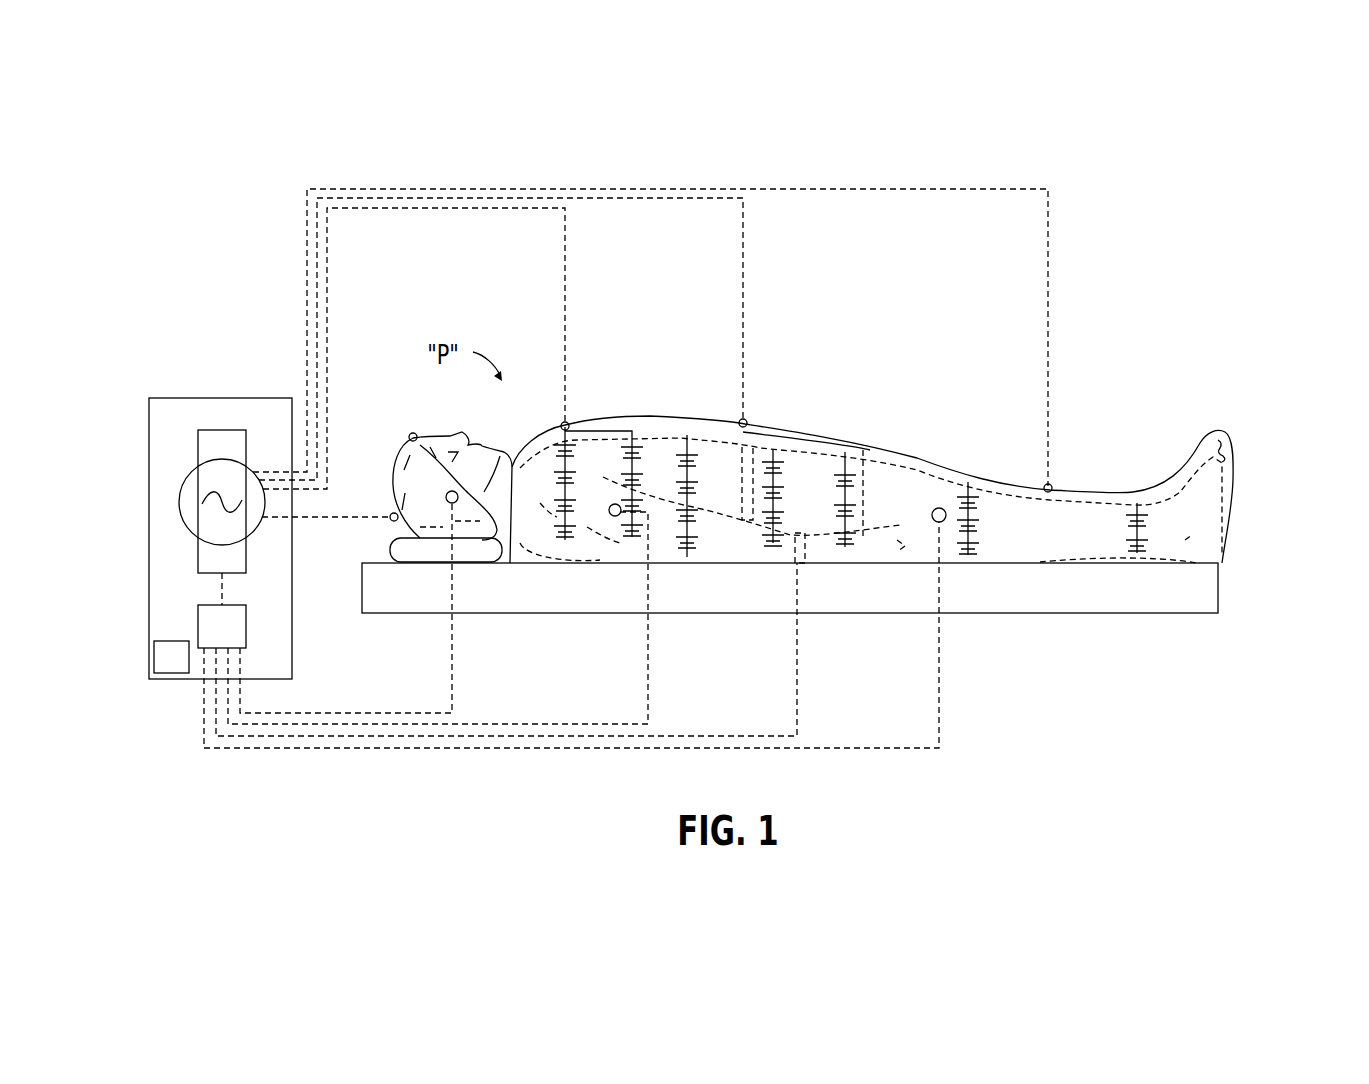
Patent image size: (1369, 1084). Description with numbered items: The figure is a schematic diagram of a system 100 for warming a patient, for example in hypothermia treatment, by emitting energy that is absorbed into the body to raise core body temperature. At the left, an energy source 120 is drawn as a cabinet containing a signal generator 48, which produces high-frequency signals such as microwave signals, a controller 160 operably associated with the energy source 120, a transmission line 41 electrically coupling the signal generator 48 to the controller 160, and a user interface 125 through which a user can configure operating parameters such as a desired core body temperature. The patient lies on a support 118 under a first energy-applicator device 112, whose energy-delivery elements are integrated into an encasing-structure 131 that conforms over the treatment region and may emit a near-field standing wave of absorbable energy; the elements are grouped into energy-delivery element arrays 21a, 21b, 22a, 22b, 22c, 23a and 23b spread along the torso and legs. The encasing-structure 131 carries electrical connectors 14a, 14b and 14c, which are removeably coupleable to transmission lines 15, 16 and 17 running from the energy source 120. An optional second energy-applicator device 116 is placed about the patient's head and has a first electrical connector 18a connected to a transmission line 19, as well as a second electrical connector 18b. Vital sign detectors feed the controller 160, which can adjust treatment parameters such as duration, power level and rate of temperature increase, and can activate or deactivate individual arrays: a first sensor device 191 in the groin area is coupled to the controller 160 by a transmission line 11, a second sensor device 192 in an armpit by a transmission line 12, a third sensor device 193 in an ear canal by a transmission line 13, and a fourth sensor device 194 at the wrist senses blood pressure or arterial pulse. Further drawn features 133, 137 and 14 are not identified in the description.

The system 100 is at (1121, 154).
The energy source 120 is at (180, 397).
The signal generator 48 is at (228, 428).
The transmission line 41 is at (222, 590).
The controller 160 is at (246, 630).
The user interface 125 is at (170, 674).
The transmission line 19 is at (388, 519).
The first electrical connector 18a is at (392, 513).
The second electrical connector 18b is at (413, 433).
The second energy-applicator device 116 is at (394, 460).
The third sensor device 193 is at (450, 503).
The second sensor device 192 is at (612, 516).
The first sensor device 191 is at (936, 522).
The garment edge 133 is at (506, 543).
The first energy-applicator device 112 is at (650, 418).
The encasing-structure 131 is at (917, 456).
The foot 137 is at (1231, 431).
The table 118 is at (1207, 592).
The electrical connector 14a is at (568, 422).
The electrical connector 14b is at (746, 420).
The electrical connector 14c is at (1050, 485).
The transmission line 15 is at (565, 265).
The transmission line 16 is at (743, 265).
The transmission line 17 is at (1048, 265).
The fourth sensor device 194 is at (801, 538).
The energy-delivery element array 21a is at (565, 543).
The energy-delivery element array 21b is at (632, 552).
The energy-delivery element array 22a is at (687, 563).
The energy-delivery element array 22b is at (773, 550).
The energy-delivery element array 22c is at (845, 555).
The energy-delivery element array 23a is at (968, 560).
The energy-delivery element array 23b is at (1137, 565).
The transmission line 11 is at (941, 678).
The transmission line 12 is at (650, 678).
The transmission line 13 is at (454, 675).
The cable 14 is at (799, 678).